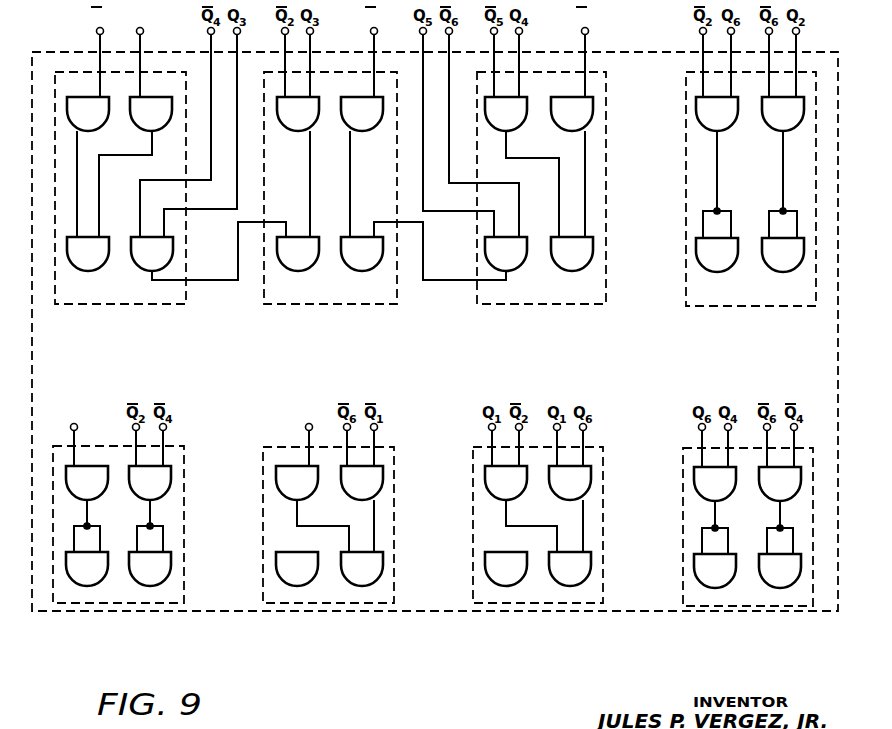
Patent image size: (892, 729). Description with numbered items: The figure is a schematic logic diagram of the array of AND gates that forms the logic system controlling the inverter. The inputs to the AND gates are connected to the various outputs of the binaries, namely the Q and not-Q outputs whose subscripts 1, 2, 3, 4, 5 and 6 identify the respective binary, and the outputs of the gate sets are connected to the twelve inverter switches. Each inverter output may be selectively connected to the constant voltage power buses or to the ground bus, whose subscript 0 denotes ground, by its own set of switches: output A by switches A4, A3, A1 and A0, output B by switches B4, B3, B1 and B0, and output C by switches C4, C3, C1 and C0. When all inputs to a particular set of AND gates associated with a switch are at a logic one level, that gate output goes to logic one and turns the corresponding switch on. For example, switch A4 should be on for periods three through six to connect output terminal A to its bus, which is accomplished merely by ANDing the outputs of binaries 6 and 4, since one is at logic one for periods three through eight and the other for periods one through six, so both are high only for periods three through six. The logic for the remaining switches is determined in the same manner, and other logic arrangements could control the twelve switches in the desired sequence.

The AND gate producing output C0 0 is at (717, 272).
The AND gate with input Q1-bar 1 is at (285, 404).
The AND gate with input Q2 2 is at (77, 97).
The AND gate with input Q3-bar 3 is at (166, 7).
The AND gate with input Q4 4 is at (99, 466).
The AND gate with input Q5 5 is at (350, 97).
The AND gate with input Q6 6 is at (559, 97).
The switch B3 is at (88, 271).
The switch B1 is at (298, 271).
The switch A3 is at (362, 271).
The switch A1 is at (572, 271).
The switch C0 is at (717, 248).
The switch C4 is at (783, 272).
The switch B0 is at (87, 586).
The switch B4 is at (150, 586).
The switch C1 is at (362, 586).
The switch C3 is at (570, 586).
The switch A4 is at (715, 588).
The switch A0 is at (780, 588).